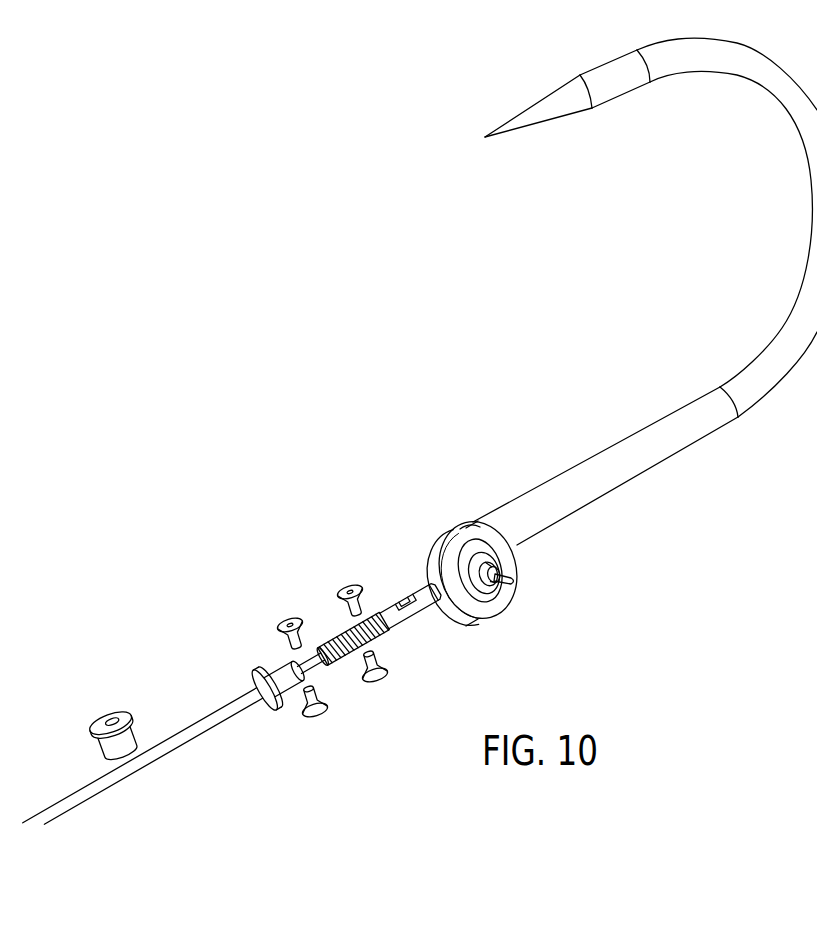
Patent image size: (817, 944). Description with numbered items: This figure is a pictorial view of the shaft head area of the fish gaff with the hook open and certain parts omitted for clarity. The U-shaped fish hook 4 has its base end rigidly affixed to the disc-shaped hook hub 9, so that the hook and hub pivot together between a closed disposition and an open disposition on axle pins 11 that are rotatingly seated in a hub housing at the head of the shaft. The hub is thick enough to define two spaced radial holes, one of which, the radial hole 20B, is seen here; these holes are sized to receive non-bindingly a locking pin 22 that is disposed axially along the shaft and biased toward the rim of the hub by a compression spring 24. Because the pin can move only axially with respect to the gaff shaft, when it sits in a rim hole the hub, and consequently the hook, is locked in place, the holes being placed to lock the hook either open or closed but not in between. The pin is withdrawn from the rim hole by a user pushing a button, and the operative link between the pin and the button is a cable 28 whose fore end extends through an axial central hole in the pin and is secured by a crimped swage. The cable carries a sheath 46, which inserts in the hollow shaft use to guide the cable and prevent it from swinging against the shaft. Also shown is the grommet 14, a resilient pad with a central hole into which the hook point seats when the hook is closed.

The fish hook 4 is at (811, 198).
The hook hub 9 is at (442, 546).
The radial hole 20B is at (468, 526).
The axle pin 11 is at (512, 580).
The locking pin 22 is at (422, 580).
The compression spring 24 is at (333, 625).
The cable 28 is at (312, 665).
The sheath 46 is at (210, 705).
The grommet 14 is at (120, 708).